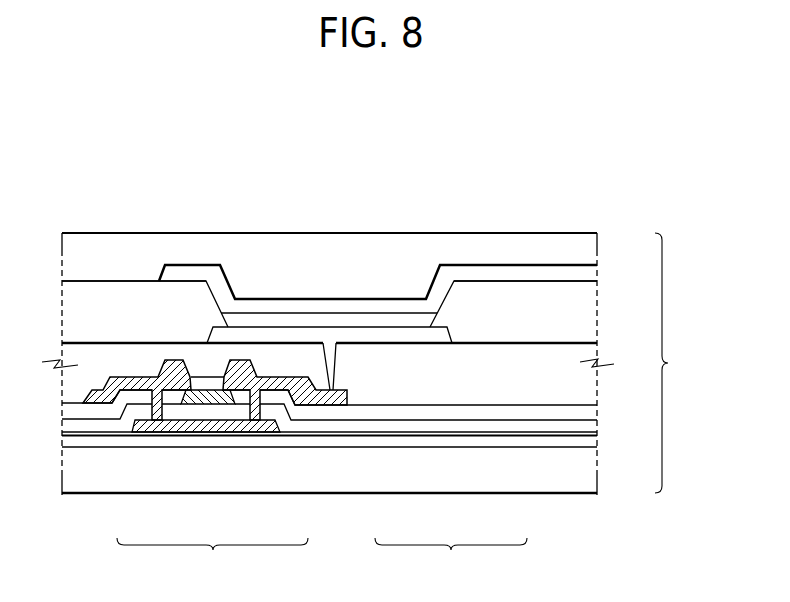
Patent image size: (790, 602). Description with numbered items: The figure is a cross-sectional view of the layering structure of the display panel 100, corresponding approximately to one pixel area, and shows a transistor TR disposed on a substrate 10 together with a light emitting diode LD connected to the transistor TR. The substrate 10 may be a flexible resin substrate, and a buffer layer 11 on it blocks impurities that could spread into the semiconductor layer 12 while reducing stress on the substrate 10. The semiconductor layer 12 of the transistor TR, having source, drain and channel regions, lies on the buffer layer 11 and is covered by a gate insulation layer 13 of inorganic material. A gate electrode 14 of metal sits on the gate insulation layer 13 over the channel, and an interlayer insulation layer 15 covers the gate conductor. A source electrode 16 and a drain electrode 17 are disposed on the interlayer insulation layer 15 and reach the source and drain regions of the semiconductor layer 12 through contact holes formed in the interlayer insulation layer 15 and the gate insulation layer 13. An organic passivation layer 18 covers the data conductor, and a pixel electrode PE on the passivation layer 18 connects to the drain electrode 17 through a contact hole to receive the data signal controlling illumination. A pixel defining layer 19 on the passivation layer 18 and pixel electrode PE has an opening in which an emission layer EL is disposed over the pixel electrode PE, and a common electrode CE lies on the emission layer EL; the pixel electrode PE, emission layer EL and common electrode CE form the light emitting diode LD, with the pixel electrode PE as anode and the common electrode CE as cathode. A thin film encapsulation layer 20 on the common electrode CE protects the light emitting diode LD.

The substrate 10 is at (589, 470).
The buffer layer 11 is at (589, 442).
The semiconductor layer 12 is at (246, 425).
The gate insulation layer 13 is at (589, 428).
The gate electrode 14 is at (203, 397).
The interlayer insulation layer 15 is at (589, 411).
The source electrode 16 is at (146, 390).
The drain electrode 17 is at (284, 383).
The passivation layer 18 is at (589, 376).
The pixel defining layer 19 is at (589, 305).
The thin film encapsulation layer 20 is at (589, 243).
The display panel 100 is at (676, 363).
The pixel electrode PE is at (374, 335).
The emission layer EL is at (412, 320).
The common electrode CE is at (500, 273).
The transistor TR is at (212, 560).
The light emitting diode LD is at (451, 560).